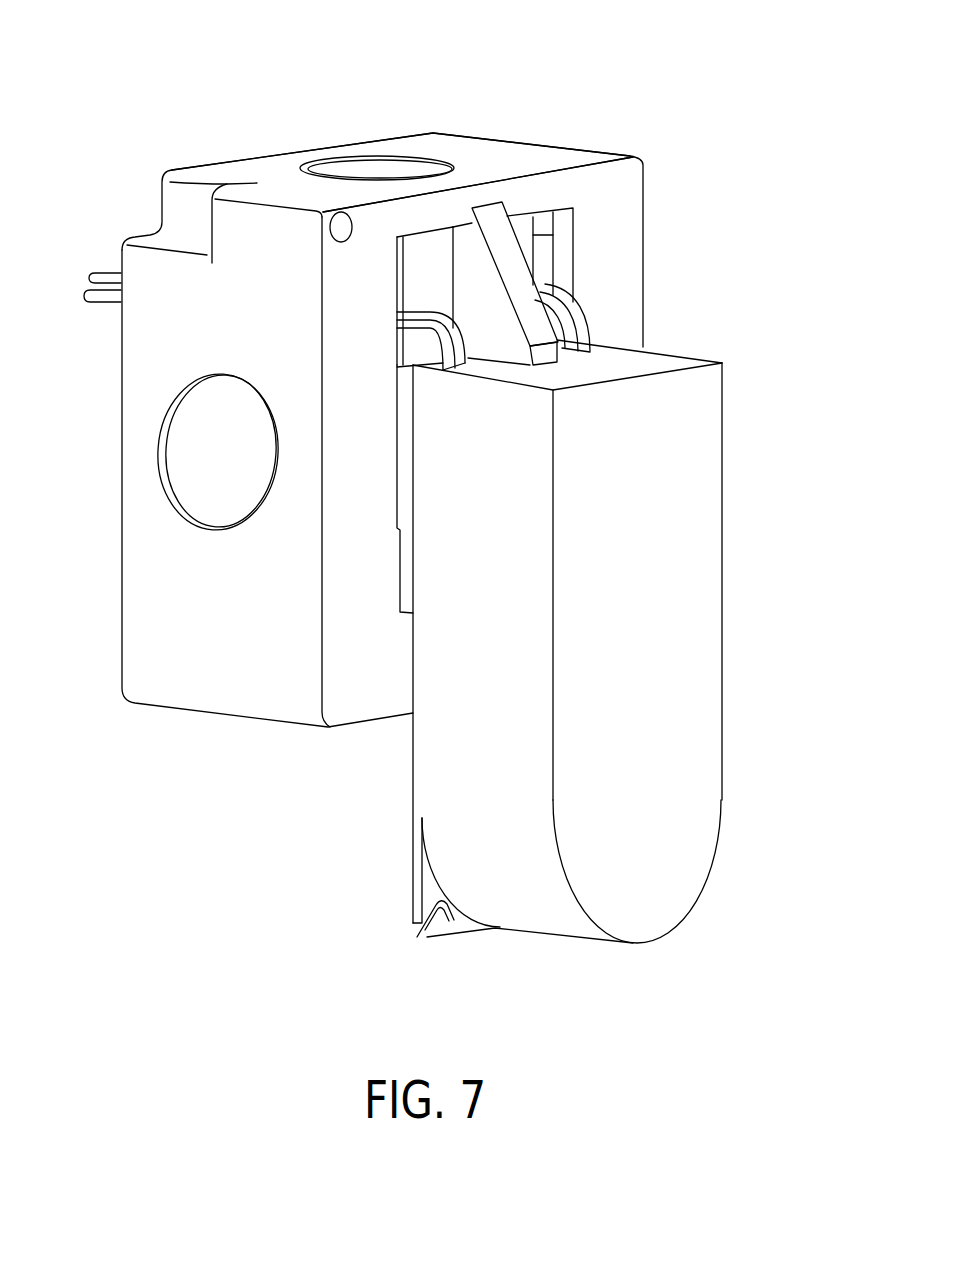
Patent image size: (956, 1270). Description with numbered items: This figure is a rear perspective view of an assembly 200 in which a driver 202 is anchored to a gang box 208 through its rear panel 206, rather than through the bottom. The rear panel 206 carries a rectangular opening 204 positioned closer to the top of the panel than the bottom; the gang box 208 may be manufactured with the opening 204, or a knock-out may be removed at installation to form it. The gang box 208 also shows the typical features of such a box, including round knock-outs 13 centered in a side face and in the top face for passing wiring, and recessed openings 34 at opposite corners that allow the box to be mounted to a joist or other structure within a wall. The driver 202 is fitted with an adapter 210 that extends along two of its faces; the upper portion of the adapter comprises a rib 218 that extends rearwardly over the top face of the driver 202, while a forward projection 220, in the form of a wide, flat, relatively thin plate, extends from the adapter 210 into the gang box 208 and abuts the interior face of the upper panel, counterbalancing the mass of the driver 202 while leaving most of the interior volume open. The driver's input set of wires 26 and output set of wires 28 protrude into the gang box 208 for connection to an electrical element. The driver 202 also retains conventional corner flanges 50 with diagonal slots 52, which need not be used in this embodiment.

The assembly 200 is at (586, 71).
The driver 202 is at (732, 433).
The opening 204 is at (547, 252).
The rear panel 206 is at (518, 192).
The gang box 208 is at (475, 132).
The adapter 210 is at (541, 350).
The rib 218 is at (500, 217).
The forward projection 220 is at (470, 218).
The knock-outs 13 is at (368, 172).
The input set of wires 26 is at (570, 287).
The output set of wires 28 is at (412, 342).
The recessed openings 34 is at (210, 215).
The corner flanges 50 is at (430, 888).
The diagonal slots 52 is at (430, 923).